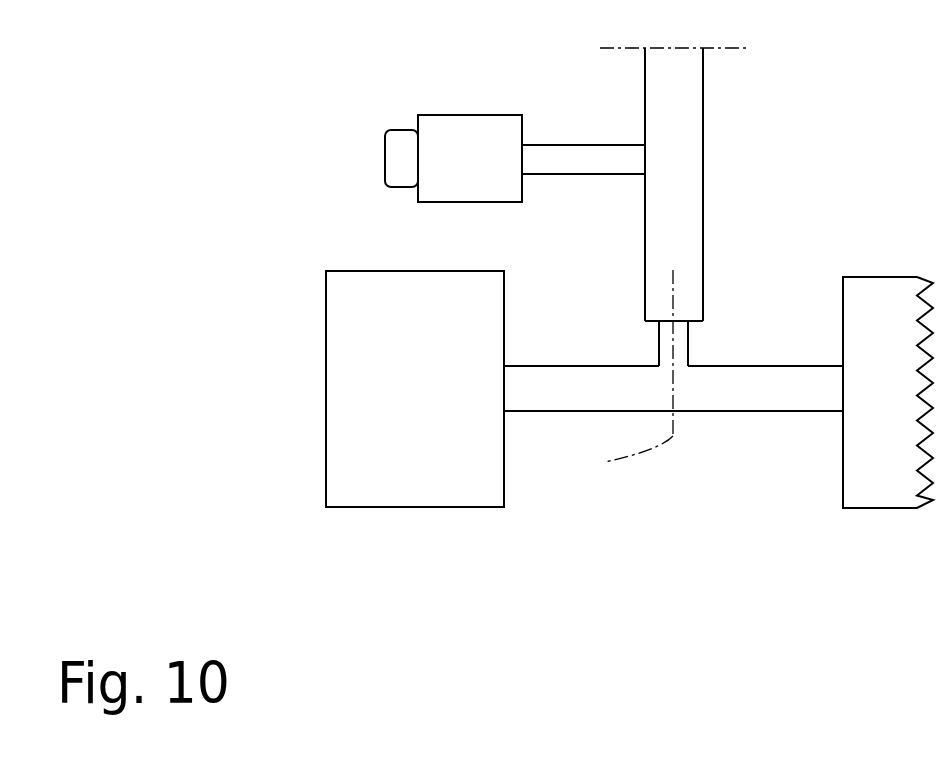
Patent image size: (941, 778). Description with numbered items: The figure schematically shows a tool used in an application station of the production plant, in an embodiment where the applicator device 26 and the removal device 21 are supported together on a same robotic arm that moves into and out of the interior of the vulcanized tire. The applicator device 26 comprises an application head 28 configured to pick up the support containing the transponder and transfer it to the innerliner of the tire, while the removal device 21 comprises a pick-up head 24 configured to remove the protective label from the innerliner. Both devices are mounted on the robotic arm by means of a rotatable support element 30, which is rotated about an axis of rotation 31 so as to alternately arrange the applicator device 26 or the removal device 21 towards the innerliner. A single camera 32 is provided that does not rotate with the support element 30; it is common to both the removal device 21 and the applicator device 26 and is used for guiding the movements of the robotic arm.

The removal device 21 is at (893, 585).
The pick-up head 24 is at (881, 315).
The applicator device 26 is at (482, 608).
The application head 28 is at (430, 462).
The rotatable support element 30 is at (755, 387).
The axis of rotation 31 is at (661, 270).
The camera 32 is at (459, 158).